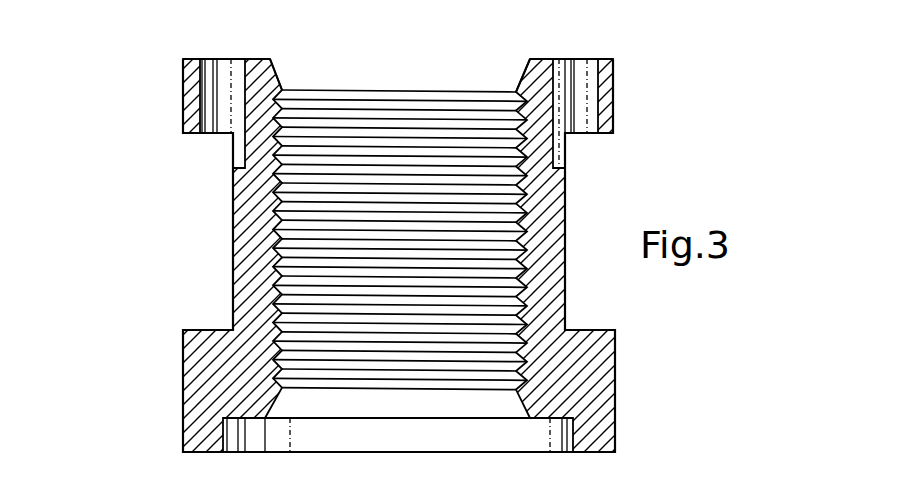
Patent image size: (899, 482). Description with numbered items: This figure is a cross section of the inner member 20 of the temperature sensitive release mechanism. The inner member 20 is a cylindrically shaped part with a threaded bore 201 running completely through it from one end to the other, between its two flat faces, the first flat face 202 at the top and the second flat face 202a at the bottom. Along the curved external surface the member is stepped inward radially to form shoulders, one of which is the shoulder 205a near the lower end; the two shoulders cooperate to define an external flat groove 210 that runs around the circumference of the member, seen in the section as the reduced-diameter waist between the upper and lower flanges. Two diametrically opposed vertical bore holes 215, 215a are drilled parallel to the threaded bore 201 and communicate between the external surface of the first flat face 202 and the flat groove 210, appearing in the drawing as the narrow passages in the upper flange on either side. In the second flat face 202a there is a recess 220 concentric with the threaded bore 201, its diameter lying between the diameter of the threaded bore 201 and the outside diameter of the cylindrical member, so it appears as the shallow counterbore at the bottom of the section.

The inner member 20 is at (170, 283).
The threaded bore 201 is at (522, 206).
The first flat face 202 is at (533, 58).
The second flat face 202a is at (183, 450).
The inwardly radially stepped shoulder 205a is at (586, 330).
The external flat groove 210 is at (233, 207).
The vertical bore hole 215 is at (598, 91).
The vertical bore hole 215a is at (200, 92).
The recess 220 is at (555, 436).